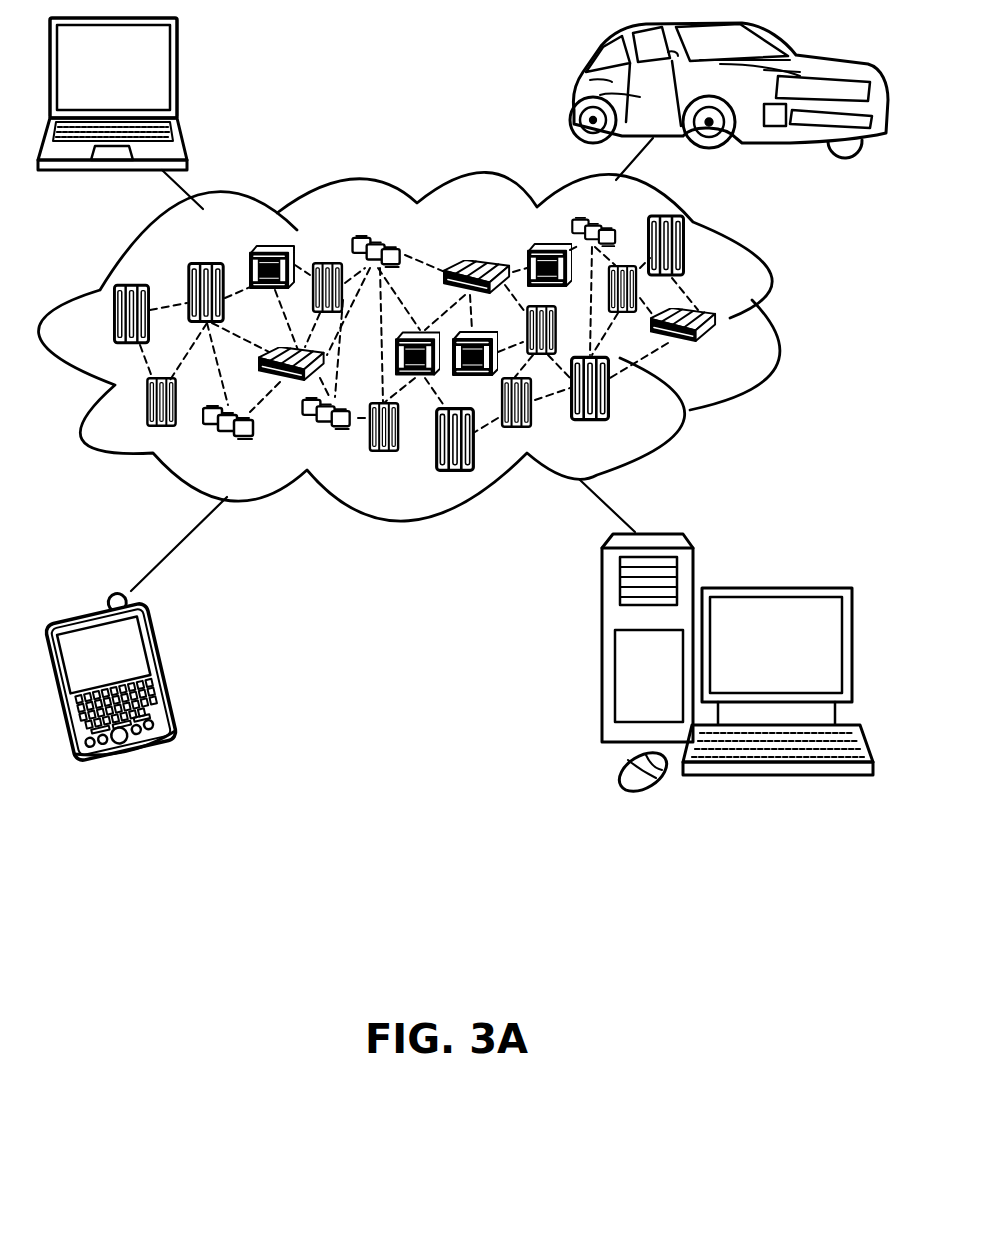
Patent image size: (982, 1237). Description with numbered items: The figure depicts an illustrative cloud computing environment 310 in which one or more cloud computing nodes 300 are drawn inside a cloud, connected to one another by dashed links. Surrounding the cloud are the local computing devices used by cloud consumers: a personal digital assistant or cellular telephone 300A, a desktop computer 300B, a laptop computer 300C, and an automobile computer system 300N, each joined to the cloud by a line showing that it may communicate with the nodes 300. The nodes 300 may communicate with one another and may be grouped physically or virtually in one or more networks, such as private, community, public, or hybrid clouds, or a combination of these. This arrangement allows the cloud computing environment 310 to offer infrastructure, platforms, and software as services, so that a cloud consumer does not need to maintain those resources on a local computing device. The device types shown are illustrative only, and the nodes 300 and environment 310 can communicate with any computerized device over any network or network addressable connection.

The cloud computing nodes 300 is at (730, 353).
The cloud computing environment 310 is at (773, 321).
The personal digital assistant (PDA) or cellular telephone 300A is at (168, 672).
The desktop computer 300B is at (775, 587).
The laptop computer 300C is at (178, 73).
The automobile computer system 300N is at (575, 90).